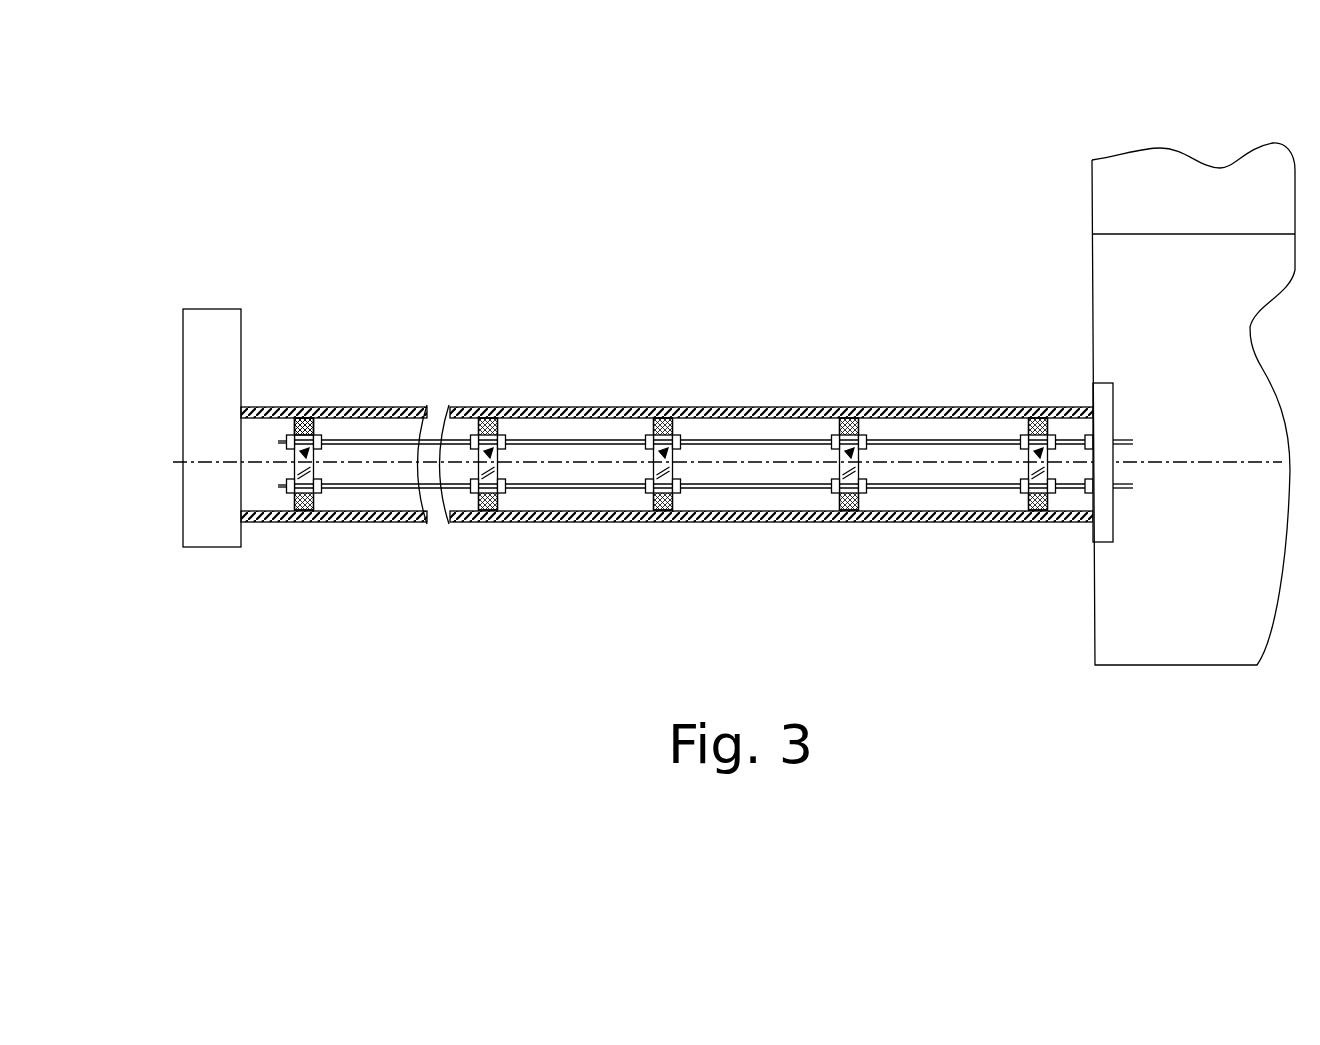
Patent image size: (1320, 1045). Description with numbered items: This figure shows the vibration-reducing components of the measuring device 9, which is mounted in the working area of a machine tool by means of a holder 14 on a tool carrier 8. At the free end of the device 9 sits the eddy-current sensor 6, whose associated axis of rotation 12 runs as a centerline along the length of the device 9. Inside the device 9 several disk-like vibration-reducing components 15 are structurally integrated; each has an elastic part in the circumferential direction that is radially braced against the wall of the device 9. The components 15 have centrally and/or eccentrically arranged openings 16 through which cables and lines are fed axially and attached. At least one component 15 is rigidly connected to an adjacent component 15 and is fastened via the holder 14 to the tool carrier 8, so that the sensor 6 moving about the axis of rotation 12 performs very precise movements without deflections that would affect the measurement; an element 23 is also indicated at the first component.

The sensor 6 is at (212, 352).
The insulating ring 23 is at (306, 422).
The vibration-reducing component 15 is at (1036, 455).
The device 9 is at (608, 407).
The openings 16 is at (503, 473).
The axis of rotation 12 is at (808, 462).
The tool carrier 8 is at (1128, 190).
The holder 14 is at (1185, 385).